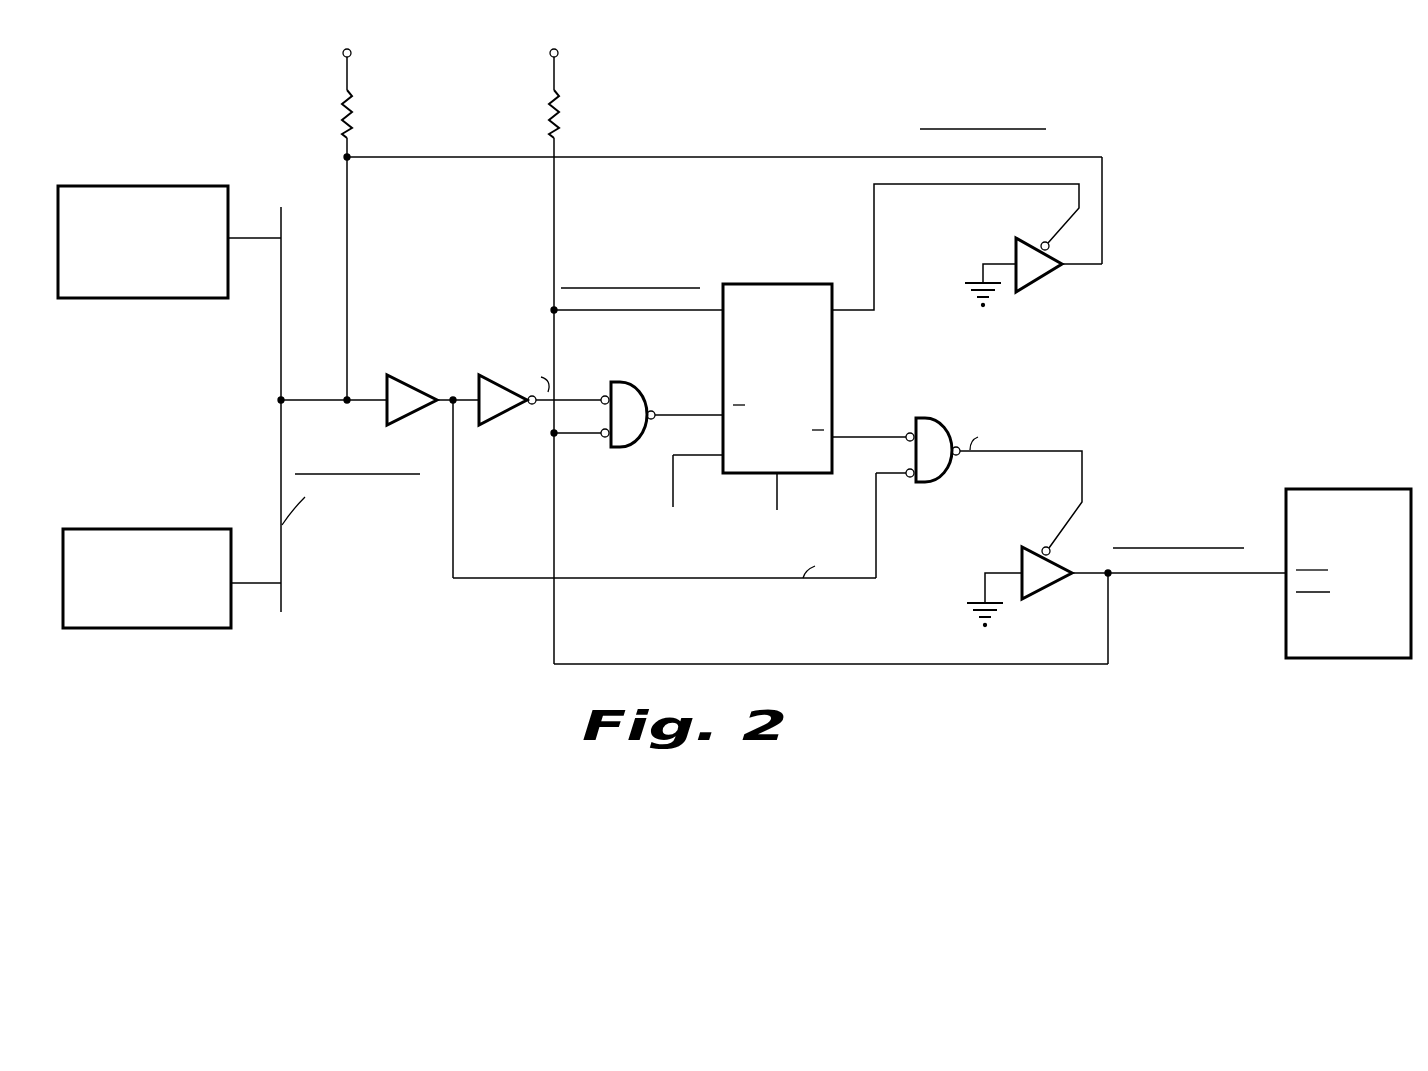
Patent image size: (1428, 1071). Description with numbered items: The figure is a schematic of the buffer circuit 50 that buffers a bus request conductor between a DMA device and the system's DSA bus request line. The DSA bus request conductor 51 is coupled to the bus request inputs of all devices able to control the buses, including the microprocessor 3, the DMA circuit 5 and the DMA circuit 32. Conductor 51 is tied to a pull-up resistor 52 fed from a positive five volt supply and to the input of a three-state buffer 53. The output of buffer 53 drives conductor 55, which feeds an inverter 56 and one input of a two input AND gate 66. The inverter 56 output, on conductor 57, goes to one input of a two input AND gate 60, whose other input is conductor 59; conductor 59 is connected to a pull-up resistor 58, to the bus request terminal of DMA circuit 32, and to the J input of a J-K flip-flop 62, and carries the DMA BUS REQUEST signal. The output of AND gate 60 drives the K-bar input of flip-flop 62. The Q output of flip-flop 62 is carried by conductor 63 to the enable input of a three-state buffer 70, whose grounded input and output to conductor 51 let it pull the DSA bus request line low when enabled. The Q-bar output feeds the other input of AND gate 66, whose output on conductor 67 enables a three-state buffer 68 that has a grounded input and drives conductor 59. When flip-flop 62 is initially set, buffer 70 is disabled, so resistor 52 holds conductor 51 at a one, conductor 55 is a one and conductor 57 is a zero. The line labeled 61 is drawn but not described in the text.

The microprocessor 3 is at (176, 187).
The DMA circuit 5 is at (171, 529).
The DMA circuit 32 is at (1370, 489).
The buffer circuit 50 is at (452, 661).
The DSA bus request conductor 51 is at (282, 399).
The pull-up resistor 52 is at (341, 101).
The three-state buffer 53 is at (418, 358).
The conductor 55 is at (454, 398).
The inverter 56 is at (488, 377).
The conductor 57 is at (548, 405).
The pull-up resistor 58 is at (548, 105).
The conductor 59 is at (555, 598).
The two input AND gate 60 is at (626, 445).
The line 61 is at (686, 412).
The J-K flip-flop 62 is at (790, 284).
The conductor 63 is at (874, 311).
The two input AND gate 66 is at (942, 478).
The conductor 67 is at (1083, 490).
The three-state buffer 68 is at (1052, 587).
The three-state buffer 70 is at (1036, 284).